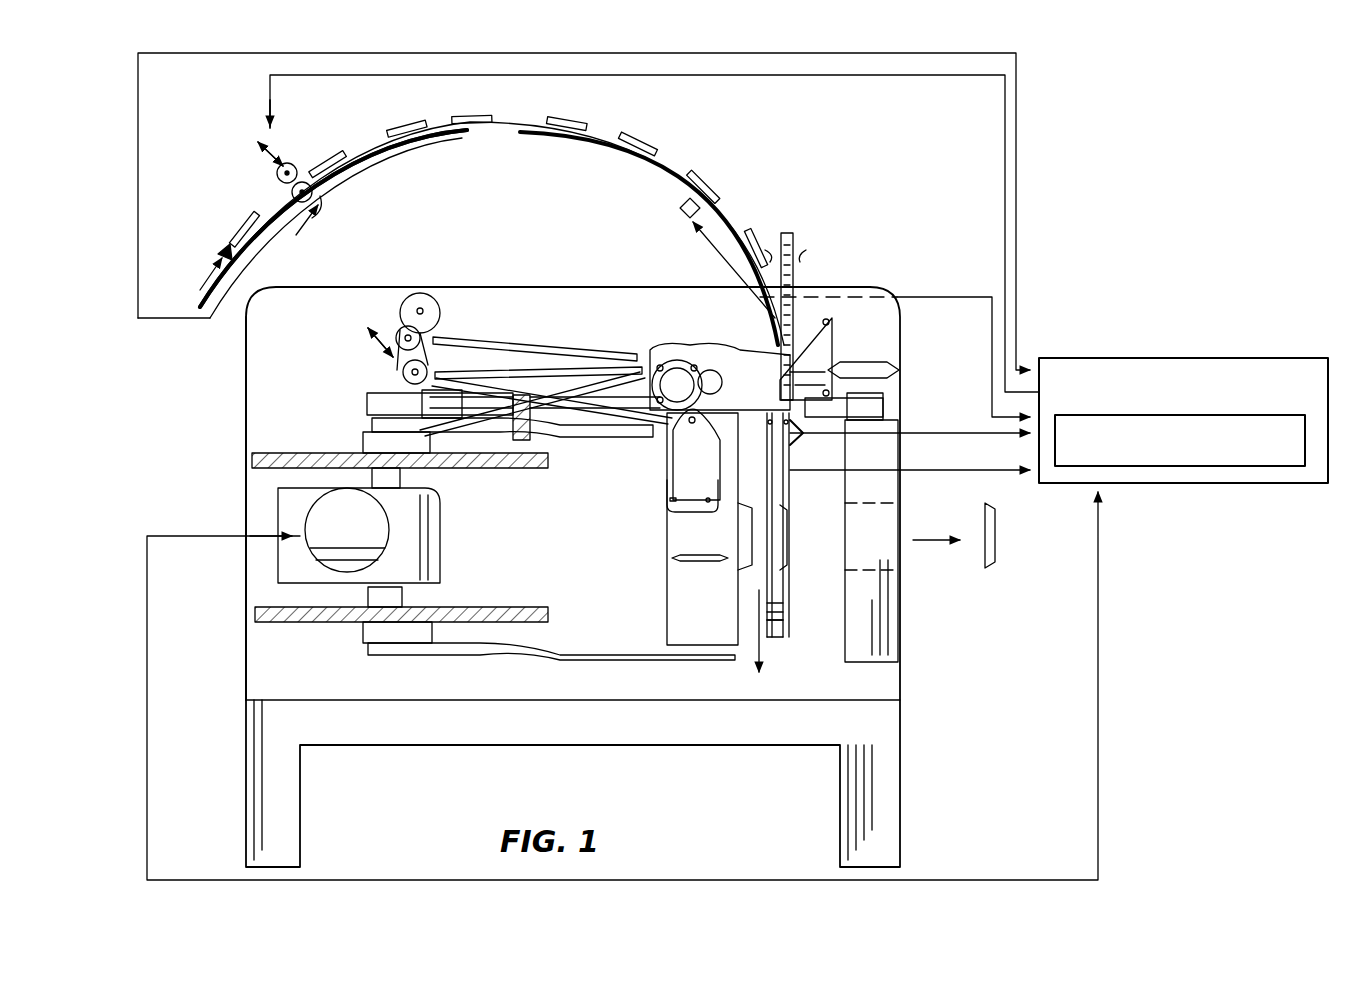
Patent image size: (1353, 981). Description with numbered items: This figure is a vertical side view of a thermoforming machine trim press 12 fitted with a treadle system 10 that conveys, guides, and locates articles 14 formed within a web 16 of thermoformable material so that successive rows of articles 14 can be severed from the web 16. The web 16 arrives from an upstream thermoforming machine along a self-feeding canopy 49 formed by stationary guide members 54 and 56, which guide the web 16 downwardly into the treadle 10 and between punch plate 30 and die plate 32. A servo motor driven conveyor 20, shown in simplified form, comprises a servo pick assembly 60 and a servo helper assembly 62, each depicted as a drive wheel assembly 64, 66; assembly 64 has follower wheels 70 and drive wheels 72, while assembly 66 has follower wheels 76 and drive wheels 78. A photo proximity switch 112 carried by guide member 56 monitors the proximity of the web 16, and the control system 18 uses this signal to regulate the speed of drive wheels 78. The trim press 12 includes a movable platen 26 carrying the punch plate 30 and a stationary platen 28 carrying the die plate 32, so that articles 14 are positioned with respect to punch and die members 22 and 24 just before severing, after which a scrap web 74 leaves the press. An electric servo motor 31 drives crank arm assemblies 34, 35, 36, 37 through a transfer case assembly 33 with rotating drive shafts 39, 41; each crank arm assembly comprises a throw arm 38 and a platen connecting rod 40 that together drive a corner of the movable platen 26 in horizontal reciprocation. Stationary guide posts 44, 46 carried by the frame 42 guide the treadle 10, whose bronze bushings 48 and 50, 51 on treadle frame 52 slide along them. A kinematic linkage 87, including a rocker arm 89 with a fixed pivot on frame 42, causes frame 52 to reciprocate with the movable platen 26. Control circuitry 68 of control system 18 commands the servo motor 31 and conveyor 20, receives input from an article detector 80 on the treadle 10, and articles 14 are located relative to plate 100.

The treadle system 10 is at (845, 235).
The trim press 12 is at (182, 238).
The articles 14 is at (590, 128).
The web 16 is at (555, 115).
The control system 18 is at (1198, 358).
The conveyor 20 is at (235, 96).
The punch member 22 is at (745, 606).
The die member 24 is at (845, 570).
The movable platen 26 is at (666, 547).
The stationary platen 28 is at (885, 500).
The punch plate 30 is at (745, 485).
The servo motor 31 is at (347, 530).
The die plate 32 is at (845, 530).
The transfer case assembly 33 is at (442, 552).
The crank arm assembly 34 is at (545, 434).
The crank arm assembly 35 is at (551, 672).
The crank arm assembly 36 is at (545, 440).
The crank arm assembly 37 is at (545, 672).
The throw arm 38 is at (362, 452).
The rotating drive shaft 39 is at (400, 537).
The platen connecting rod 40 is at (370, 425).
The rotating drive shaft 41 is at (410, 478).
The frame 42 is at (244, 372).
The guide post 44 is at (402, 382).
The guide post 46 is at (390, 392).
The bronze bushing 48 is at (445, 400).
The self-feeding canopy 49 is at (698, 113).
The bronze bushing 50 is at (707, 358).
The bronze bushing 51 is at (740, 350).
The treadle frame 52 is at (752, 345).
The guide member 54 is at (395, 143).
The guide member 56 is at (598, 142).
The servo pick assembly 60 is at (762, 452).
The servo helper assembly 62 is at (332, 105).
The drive wheel assembly 64 is at (778, 405).
The drive wheel assembly 66 is at (232, 176).
The control circuitry 68 is at (1180, 466).
The follower wheel 70 is at (792, 428).
The drive wheel 72 is at (762, 430).
The scrap web 74 is at (770, 640).
The follower wheel 76 is at (292, 163).
The drive wheel 78 is at (315, 208).
The article detector 80 is at (810, 450).
The kinematic linkage 87 is at (510, 293).
The rocker arm 89 is at (400, 325).
The plate 100 is at (783, 622).
The photo proximity switch 112 is at (672, 212).